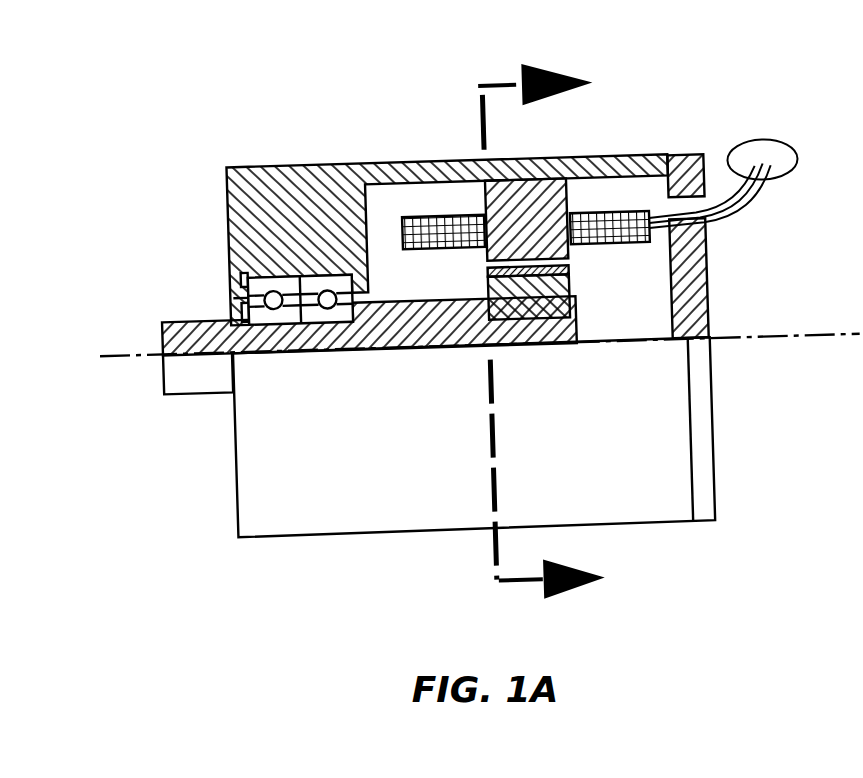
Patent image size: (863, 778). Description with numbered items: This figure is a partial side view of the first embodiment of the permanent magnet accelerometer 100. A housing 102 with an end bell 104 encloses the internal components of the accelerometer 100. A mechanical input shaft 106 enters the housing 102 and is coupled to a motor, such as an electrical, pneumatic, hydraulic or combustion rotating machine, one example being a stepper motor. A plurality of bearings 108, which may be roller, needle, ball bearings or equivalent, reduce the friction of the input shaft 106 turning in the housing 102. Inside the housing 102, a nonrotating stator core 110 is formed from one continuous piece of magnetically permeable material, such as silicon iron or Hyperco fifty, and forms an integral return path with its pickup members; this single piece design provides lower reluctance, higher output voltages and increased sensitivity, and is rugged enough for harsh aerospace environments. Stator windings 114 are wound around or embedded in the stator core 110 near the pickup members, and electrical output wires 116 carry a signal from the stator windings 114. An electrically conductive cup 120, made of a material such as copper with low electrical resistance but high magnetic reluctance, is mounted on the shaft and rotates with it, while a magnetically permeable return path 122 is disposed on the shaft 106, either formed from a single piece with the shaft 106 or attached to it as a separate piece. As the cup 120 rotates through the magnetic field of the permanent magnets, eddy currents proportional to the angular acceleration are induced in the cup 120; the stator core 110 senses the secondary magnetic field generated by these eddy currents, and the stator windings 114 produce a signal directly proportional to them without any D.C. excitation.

The permanent magnet accelerometer 100 is at (615, 656).
The housing 102 is at (250, 172).
The end bell 104 is at (718, 515).
The mechanical input shaft 106 is at (162, 332).
The bearings 108 is at (283, 352).
The stator core 110 is at (536, 192).
The stator windings 114 is at (606, 216).
The electrical output wires 116 is at (770, 142).
The electrically conductive cup 120 is at (573, 268).
The magnetically permeable return path 122 is at (573, 297).